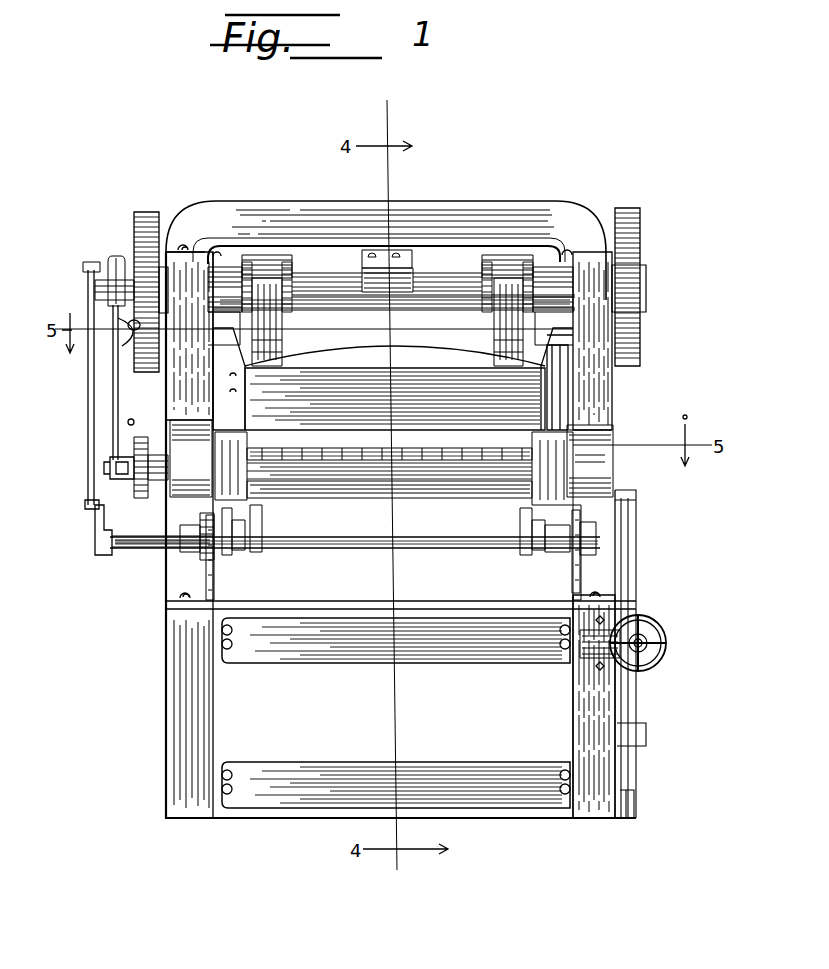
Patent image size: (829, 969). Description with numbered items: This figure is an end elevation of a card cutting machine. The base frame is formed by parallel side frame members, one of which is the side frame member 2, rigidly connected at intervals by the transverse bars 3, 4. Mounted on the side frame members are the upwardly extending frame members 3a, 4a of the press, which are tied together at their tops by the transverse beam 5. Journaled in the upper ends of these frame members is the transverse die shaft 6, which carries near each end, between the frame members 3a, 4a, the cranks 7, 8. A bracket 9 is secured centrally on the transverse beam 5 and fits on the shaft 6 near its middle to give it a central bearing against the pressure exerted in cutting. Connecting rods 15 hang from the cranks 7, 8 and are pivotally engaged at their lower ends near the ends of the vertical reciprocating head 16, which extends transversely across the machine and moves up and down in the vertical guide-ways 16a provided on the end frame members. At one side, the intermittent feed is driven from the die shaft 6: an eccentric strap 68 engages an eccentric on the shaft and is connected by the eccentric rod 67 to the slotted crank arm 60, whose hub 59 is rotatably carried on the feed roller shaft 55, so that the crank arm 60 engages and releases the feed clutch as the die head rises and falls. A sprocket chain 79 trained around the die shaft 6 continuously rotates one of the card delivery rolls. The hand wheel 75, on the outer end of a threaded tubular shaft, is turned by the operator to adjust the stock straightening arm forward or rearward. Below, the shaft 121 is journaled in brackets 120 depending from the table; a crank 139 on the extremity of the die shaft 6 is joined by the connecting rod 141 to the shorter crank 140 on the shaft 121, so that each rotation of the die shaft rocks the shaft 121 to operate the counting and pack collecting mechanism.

The side frame member 2 is at (573, 713).
The transverse bar 3 is at (278, 776).
The upwardly extending frame member 3a is at (169, 396).
The transverse bar 4 is at (353, 645).
The upwardly extending frame member 4a is at (612, 394).
The transverse beam 5 is at (236, 206).
The transverse shaft 6 is at (425, 294).
The crank 7 is at (297, 268).
The crank 8 is at (532, 266).
The bracket 9 is at (415, 264).
The connecting rod 15 is at (282, 326).
The vertical reciprocating head 16 is at (438, 354).
The vertical guide-way 16a is at (612, 378).
The shaft 55 is at (160, 490).
The hub 59 is at (139, 382).
The crank arm 60 is at (132, 488).
The eccentric rod 67 is at (119, 322).
The eccentric strap 68 is at (116, 262).
The hand wheel 75 is at (666, 634).
The sprocket chain 79 is at (613, 423).
The bracket 120 is at (278, 504).
The shaft 121 is at (343, 549).
The crank 139 is at (92, 283).
The crank 140 is at (100, 523).
The connecting rod 141 is at (90, 430).